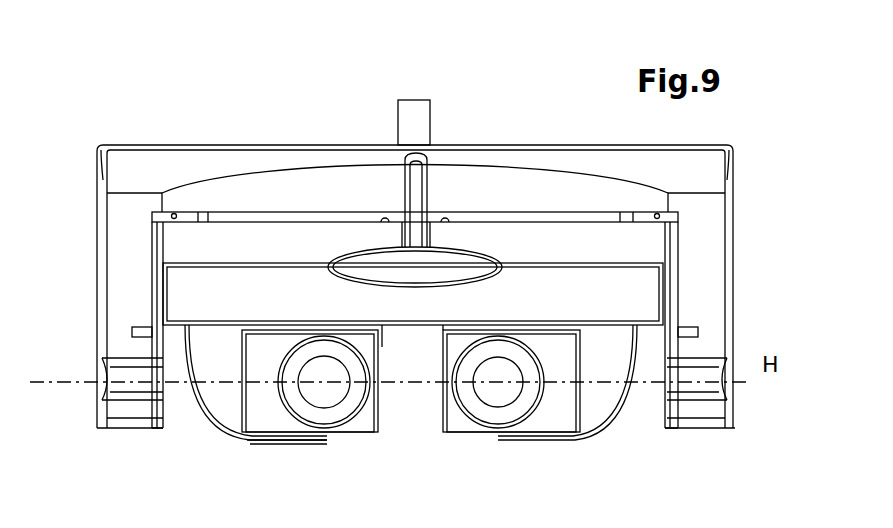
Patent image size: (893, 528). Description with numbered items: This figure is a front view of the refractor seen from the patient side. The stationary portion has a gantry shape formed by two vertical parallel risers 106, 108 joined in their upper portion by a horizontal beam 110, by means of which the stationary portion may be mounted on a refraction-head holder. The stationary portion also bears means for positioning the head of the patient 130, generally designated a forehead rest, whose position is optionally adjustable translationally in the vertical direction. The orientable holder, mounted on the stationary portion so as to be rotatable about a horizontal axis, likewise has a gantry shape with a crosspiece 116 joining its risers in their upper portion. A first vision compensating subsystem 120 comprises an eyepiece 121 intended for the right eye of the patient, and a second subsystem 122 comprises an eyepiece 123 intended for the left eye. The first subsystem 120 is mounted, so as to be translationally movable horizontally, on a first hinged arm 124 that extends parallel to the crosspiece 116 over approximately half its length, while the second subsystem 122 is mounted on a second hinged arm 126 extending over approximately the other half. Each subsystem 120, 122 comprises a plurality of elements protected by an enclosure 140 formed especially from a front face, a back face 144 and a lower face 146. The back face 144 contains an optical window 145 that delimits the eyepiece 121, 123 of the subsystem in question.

The riser 106 is at (115, 282).
The riser 108 is at (709, 277).
The horizontal beam 110 is at (230, 165).
The crosspiece 116 is at (663, 234).
The first vision compensating subsystem 120 is at (580, 441).
The eyepiece 121 is at (492, 390).
The second vision compensating subsystem 122 is at (267, 441).
The eyepiece 123 is at (322, 387).
The first hinged arm 124 is at (613, 300).
The second hinged arm 126 is at (202, 282).
The means for positioning the head of the patient 130 is at (453, 267).
The enclosure 140 is at (383, 347).
The back face 144 is at (258, 403).
The optical window 145 is at (367, 400).
The lower face 146 is at (297, 443).